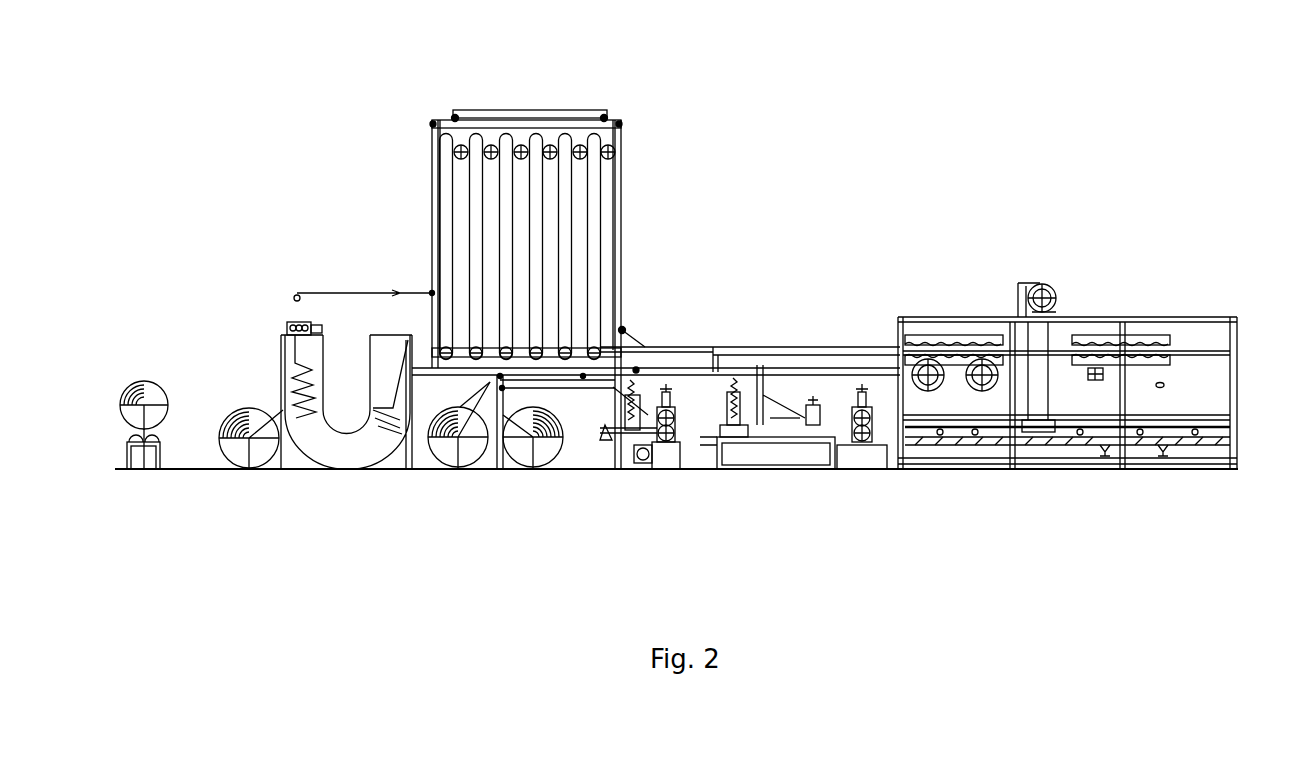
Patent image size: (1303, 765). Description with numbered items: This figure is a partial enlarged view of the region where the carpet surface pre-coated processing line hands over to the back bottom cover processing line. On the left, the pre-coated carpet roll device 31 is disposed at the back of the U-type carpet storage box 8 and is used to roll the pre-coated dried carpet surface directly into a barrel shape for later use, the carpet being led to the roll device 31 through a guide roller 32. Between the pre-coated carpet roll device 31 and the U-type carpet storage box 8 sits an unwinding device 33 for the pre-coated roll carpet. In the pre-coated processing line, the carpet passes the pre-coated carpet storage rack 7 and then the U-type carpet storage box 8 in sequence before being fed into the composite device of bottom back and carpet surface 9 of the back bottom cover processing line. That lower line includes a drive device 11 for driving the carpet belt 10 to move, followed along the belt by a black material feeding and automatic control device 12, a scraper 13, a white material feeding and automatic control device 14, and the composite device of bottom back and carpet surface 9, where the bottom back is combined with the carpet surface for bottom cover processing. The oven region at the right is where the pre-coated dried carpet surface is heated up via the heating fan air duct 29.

The pre-coated carpet roll device 31 is at (146, 420).
The unwinding device 33 is at (235, 410).
The guide roller 32 is at (297, 298).
The U-type carpet storage box 8 is at (335, 450).
The pre-coated carpet storage rack 7 is at (535, 165).
The drive device 11 is at (610, 387).
The black material feeding and automatic control device 12 is at (637, 407).
The scraper 13 is at (637, 407).
The white material feeding and automatic control device 14 is at (743, 393).
The composite device of bottom back and carpet surface 9 is at (867, 407).
The carpet belt 10 is at (1160, 455).
The heating fan air duct 29 is at (1082, 345).